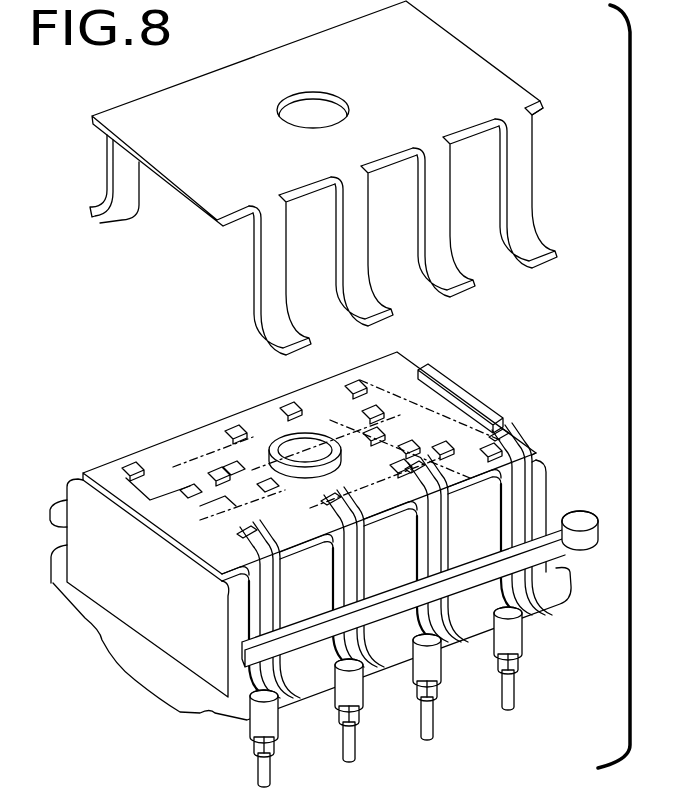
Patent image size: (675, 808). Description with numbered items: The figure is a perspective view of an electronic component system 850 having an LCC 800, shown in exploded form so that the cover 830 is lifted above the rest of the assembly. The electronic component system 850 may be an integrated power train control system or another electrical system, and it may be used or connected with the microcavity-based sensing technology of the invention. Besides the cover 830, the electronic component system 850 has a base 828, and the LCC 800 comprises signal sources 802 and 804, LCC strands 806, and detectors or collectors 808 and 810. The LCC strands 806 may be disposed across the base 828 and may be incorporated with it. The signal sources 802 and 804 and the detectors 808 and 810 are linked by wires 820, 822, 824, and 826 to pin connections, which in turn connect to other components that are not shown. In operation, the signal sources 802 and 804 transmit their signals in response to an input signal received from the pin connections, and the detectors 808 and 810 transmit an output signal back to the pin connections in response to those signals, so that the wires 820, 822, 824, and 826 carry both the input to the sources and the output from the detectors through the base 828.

The LCC 800 is at (276, 430).
The signal source 802 is at (378, 403).
The signal source 804 is at (196, 543).
The LCC strands 806 is at (420, 372).
The detector 808 is at (450, 430).
The detector 810 is at (214, 470).
The wire 820 is at (250, 603).
The wire 822 is at (393, 552).
The wire 824 is at (477, 522).
The wire 826 is at (508, 520).
The base 828 is at (100, 634).
The cover 830 is at (163, 123).
The electronic component system 850 is at (121, 295).